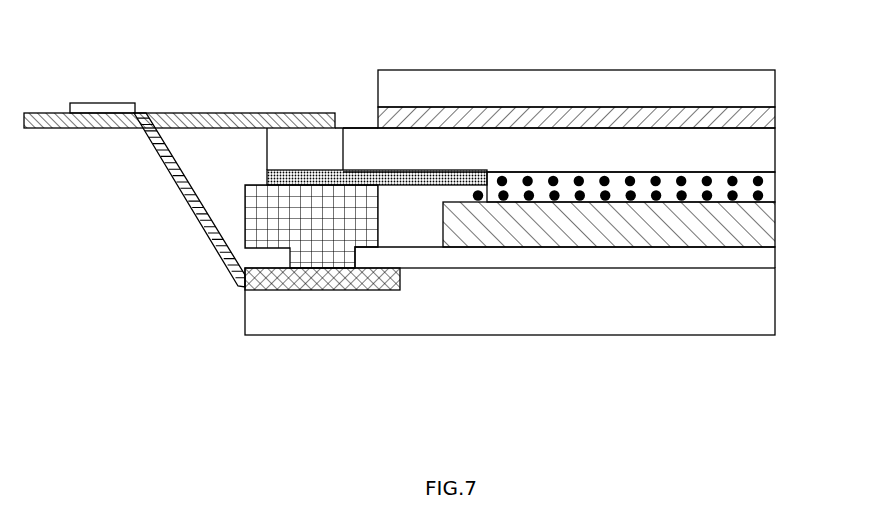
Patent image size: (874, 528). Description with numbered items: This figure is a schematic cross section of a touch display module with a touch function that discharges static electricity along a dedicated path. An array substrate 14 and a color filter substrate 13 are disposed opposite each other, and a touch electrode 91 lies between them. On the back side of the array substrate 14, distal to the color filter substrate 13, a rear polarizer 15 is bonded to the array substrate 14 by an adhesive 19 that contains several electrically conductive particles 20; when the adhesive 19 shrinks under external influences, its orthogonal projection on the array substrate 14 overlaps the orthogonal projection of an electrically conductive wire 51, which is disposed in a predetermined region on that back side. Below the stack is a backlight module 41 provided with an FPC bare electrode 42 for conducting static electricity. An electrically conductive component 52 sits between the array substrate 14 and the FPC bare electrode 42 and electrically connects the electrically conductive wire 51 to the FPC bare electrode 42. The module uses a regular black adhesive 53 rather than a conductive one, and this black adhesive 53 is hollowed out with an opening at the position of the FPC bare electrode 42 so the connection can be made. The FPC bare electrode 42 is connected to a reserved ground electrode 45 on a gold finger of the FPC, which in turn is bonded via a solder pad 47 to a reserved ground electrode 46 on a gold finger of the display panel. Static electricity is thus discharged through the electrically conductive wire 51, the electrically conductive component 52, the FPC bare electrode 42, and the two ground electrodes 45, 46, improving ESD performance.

The color filter substrate 13 is at (775, 88).
The touch electrode 91 is at (775, 118).
The array substrate 14 is at (775, 150).
The adhesive 19 is at (775, 190).
The electrically conductive particles 20 is at (607, 176).
The rear polarizer 15 is at (775, 232).
The black adhesive 53 is at (685, 268).
The backlight module 41 is at (553, 335).
The FPC bare electrode 42 is at (267, 291).
The electrically conductive component 52 is at (328, 250).
The electrically conductive wire 51 is at (343, 170).
The reserved ground electrode on a gold finger of the display panel 46 is at (218, 113).
The solder pad 47 is at (90, 103).
The reserved ground electrode on a gold finger of the FPC 45 is at (165, 178).